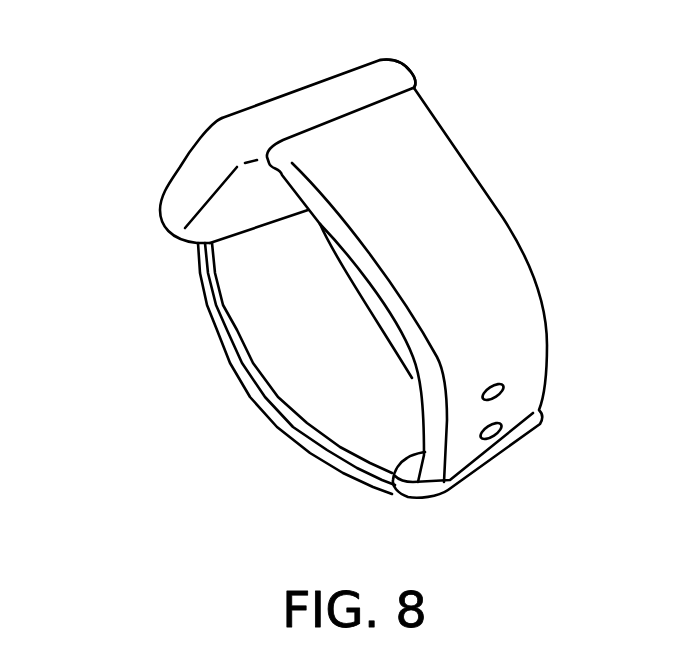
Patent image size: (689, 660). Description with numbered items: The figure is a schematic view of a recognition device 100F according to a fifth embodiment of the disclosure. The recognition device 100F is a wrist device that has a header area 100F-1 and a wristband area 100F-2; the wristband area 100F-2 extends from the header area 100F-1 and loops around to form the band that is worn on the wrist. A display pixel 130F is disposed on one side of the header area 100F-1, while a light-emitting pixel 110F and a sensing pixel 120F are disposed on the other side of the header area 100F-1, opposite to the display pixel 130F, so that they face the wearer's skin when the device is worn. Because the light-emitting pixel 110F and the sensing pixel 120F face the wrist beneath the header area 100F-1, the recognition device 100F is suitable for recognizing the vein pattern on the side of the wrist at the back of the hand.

The recognition device 100F is at (345, 274).
The header area 100F-1 is at (383, 72).
The wristband area 100F-2 is at (493, 242).
The light-emitting pixel 110F is at (148, 233).
The sensing pixel 120F is at (258, 204).
The display pixel 130F is at (228, 114).